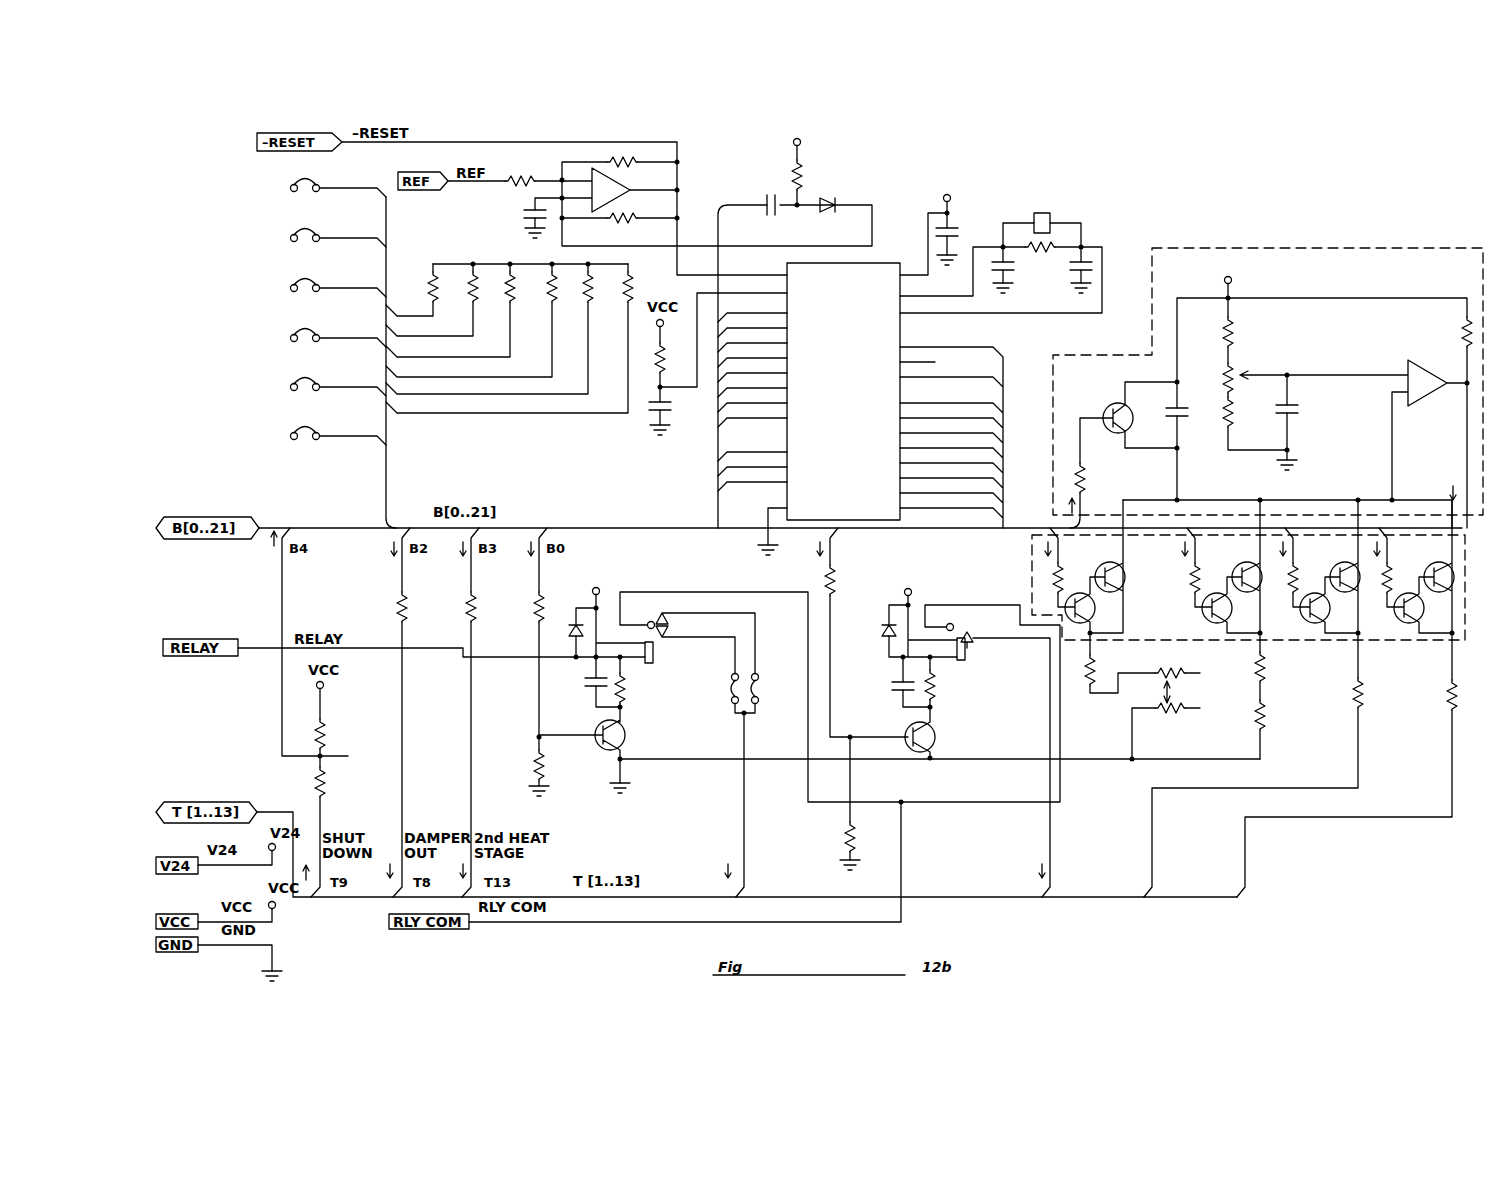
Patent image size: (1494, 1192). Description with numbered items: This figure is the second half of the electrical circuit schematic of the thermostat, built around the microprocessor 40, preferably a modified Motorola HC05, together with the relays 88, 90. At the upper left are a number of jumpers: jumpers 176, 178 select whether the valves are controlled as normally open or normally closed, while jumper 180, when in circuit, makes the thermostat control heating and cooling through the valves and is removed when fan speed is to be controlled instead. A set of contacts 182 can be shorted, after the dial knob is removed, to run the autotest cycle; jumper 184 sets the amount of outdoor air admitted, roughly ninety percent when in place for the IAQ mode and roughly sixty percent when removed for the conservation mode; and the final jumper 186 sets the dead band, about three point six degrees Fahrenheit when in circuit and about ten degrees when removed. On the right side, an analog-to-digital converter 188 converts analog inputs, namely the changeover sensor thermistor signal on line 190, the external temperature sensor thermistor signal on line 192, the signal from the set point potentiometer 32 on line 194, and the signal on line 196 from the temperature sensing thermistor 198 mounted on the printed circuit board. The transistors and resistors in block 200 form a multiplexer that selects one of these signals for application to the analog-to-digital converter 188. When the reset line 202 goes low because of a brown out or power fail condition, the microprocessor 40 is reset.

The jumper 176 is at (290, 186).
The jumper 178 is at (290, 236).
The jumper 180 is at (290, 286).
The set of contacts 182 is at (290, 336).
The jumper 184 is at (290, 385).
The jumper 186 is at (290, 434).
The reset line 202 is at (680, 204).
The microprocessor 40 is at (902, 530).
The analog-to-digital converter 188 is at (1180, 248).
The relay 88 is at (709, 675).
The relay 90 is at (975, 668).
The block 200 is at (1337, 641).
The line 196 is at (1276, 632).
The line 194 is at (1105, 696).
The set point potentiometer 32 is at (1191, 694).
The temperature sensing thermistor 198 is at (1262, 713).
The line 192 is at (1358, 745).
The line 190 is at (1452, 768).